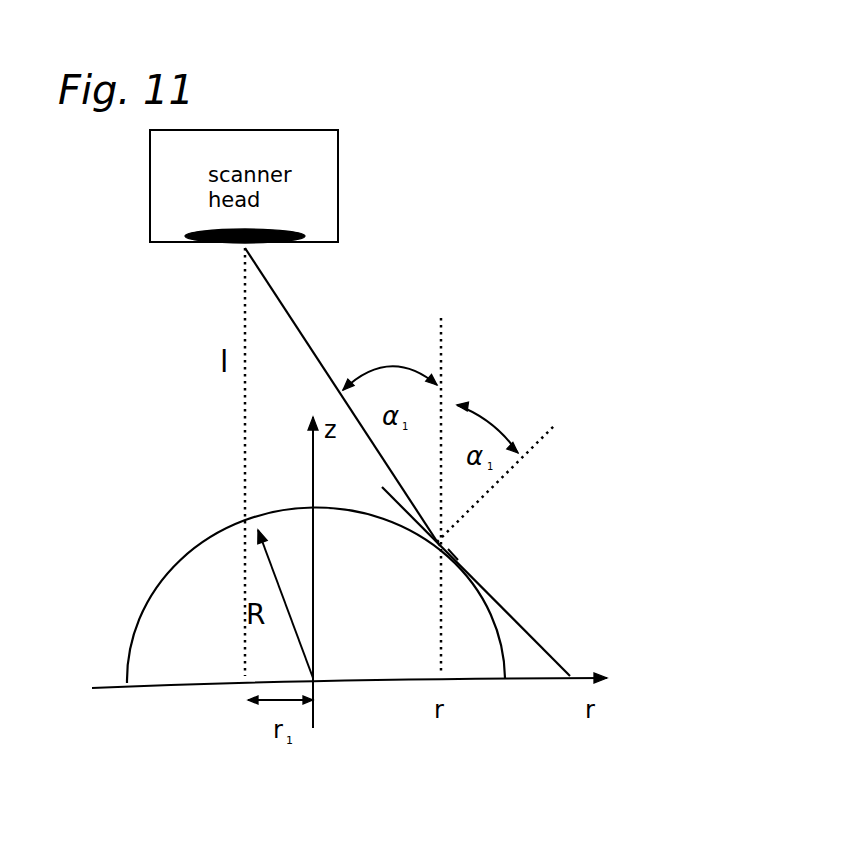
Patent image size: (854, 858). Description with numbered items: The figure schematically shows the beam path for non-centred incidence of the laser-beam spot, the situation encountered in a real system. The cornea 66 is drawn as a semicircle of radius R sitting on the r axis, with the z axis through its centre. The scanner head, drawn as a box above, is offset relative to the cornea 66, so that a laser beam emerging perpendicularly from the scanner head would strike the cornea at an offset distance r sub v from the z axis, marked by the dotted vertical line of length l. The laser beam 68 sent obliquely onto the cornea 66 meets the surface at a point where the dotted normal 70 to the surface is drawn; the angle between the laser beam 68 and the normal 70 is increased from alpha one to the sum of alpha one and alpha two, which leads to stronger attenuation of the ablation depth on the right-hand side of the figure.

The cornea 66 is at (158, 583).
The laser beam 68 is at (313, 347).
The normal to the surface 70 is at (533, 460).